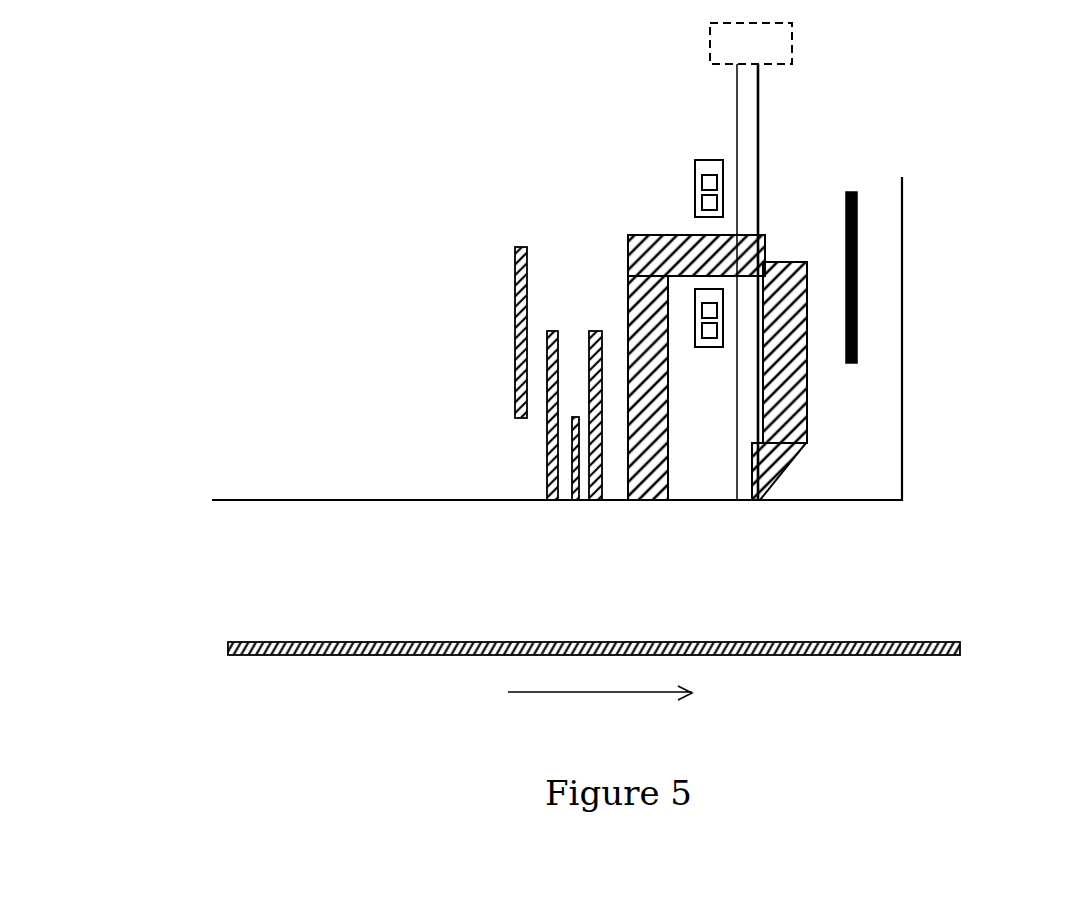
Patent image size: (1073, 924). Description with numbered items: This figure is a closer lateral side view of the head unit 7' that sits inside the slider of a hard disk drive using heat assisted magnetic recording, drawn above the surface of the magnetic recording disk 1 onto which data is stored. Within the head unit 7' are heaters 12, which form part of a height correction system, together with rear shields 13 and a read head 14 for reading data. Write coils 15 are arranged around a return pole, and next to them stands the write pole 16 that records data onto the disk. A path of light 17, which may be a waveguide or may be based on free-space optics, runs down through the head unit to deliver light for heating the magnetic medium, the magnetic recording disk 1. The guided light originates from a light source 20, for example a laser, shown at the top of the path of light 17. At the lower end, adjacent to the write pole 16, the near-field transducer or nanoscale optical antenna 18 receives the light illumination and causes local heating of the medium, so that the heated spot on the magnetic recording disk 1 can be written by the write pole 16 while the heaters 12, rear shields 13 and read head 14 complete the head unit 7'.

The head unit 7' is at (252, 128).
The magnetic recording disk 1 is at (905, 653).
The heaters 12 is at (515, 290).
The rear shields 13 is at (597, 331).
The read head 14 is at (572, 457).
The write coils 15 is at (695, 185).
The write pole 16 is at (807, 418).
The path of light 17 is at (785, 158).
The near-field transducer 18 is at (770, 492).
The light source 20 is at (792, 58).